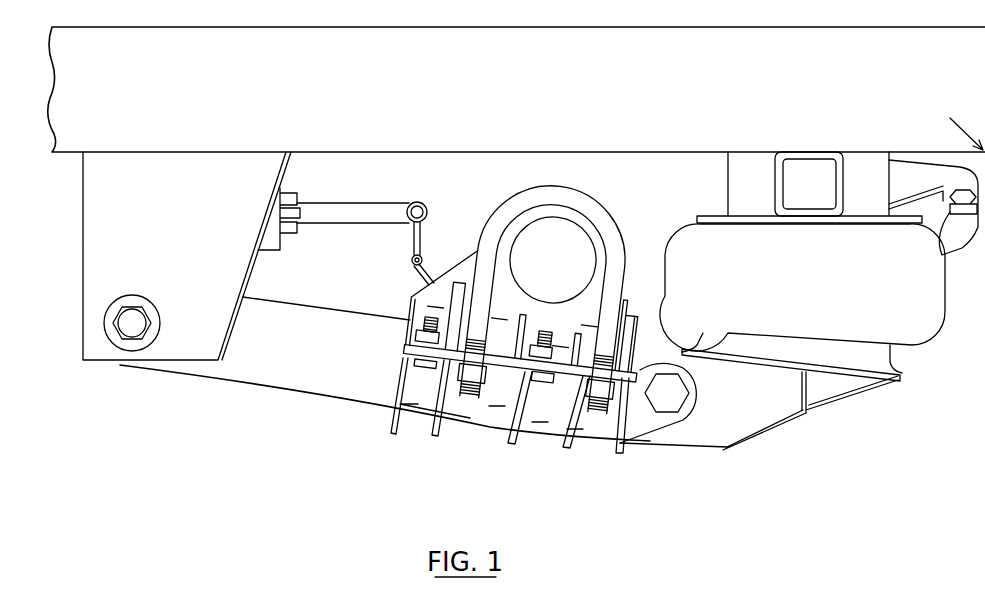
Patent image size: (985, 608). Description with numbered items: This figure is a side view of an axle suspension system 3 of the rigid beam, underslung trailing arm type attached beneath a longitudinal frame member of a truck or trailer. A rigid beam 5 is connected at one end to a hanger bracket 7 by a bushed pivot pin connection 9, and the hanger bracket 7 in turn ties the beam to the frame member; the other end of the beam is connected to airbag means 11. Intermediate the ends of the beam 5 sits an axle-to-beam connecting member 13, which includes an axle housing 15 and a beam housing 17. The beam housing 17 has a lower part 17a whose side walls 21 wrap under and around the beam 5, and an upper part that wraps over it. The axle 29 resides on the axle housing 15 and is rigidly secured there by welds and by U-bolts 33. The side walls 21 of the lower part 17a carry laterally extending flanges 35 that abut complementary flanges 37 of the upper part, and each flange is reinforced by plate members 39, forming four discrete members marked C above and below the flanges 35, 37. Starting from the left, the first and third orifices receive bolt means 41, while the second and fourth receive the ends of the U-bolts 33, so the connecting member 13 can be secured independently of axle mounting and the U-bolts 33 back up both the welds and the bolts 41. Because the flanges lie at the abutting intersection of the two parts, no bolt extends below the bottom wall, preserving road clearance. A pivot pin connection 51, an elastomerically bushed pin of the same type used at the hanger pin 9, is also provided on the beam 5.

The axle suspension system 3 is at (339, 432).
The rigid beam 5 is at (250, 365).
The hanger bracket 7 is at (150, 275).
The bushed pivot pin connection 9 is at (134, 333).
The airbag means 11 is at (905, 310).
The axle-to-beam connecting member 13 is at (468, 241).
The axle housing 15 is at (627, 323).
The beam housing 17 is at (377, 390).
The lower part 17a is at (475, 413).
The side walls 21 is at (517, 440).
The axle 29 is at (606, 228).
The U-bolts 33 is at (607, 222).
The laterally extending flanges 35 is at (400, 362).
The laterally extending flanges 37 is at (410, 343).
The plate members 39 is at (450, 282).
The bolt means 41 is at (412, 300).
The pivot pin connection 51 is at (695, 393).